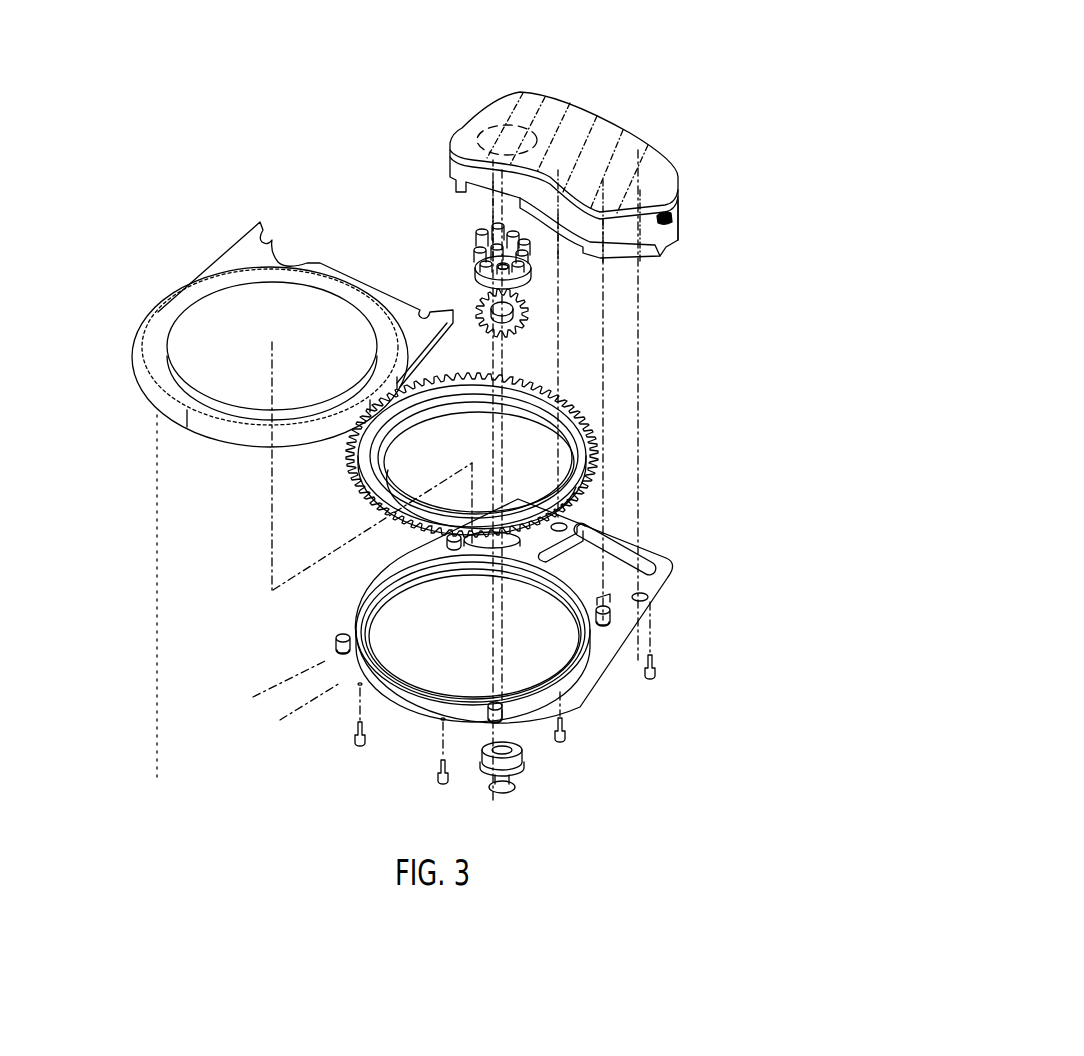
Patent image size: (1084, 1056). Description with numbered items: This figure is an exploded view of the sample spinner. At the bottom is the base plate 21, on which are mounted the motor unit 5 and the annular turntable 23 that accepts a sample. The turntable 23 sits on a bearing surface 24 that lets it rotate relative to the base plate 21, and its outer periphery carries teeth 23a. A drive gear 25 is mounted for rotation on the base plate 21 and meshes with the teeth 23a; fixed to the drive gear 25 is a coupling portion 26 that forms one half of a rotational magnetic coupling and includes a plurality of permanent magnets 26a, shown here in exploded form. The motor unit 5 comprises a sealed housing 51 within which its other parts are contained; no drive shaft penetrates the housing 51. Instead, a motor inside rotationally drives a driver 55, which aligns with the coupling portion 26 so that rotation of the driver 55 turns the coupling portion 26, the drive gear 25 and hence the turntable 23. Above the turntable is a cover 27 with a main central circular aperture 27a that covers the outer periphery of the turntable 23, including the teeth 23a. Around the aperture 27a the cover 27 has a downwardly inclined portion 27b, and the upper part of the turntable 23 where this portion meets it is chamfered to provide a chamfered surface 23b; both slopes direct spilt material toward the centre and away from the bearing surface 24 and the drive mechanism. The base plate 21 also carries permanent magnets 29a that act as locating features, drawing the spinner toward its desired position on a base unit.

The motor unit 5 is at (668, 216).
The sealed housing 51 is at (648, 155).
The driver 55 is at (520, 133).
The base plate 21 is at (587, 683).
The annular turntable 23 is at (583, 457).
The teeth 23a is at (583, 418).
The chamfered surface 23b is at (587, 475).
The bearing surface 24 is at (587, 642).
The drive gear 25 is at (527, 307).
The coupling portion 26 is at (535, 278).
The permanent magnets 26a is at (480, 243).
The cover 27 is at (208, 272).
The central circular aperture 27a is at (232, 369).
The downwardly inclined portion 27b is at (168, 312).
The permanent magnets 29a is at (336, 640).